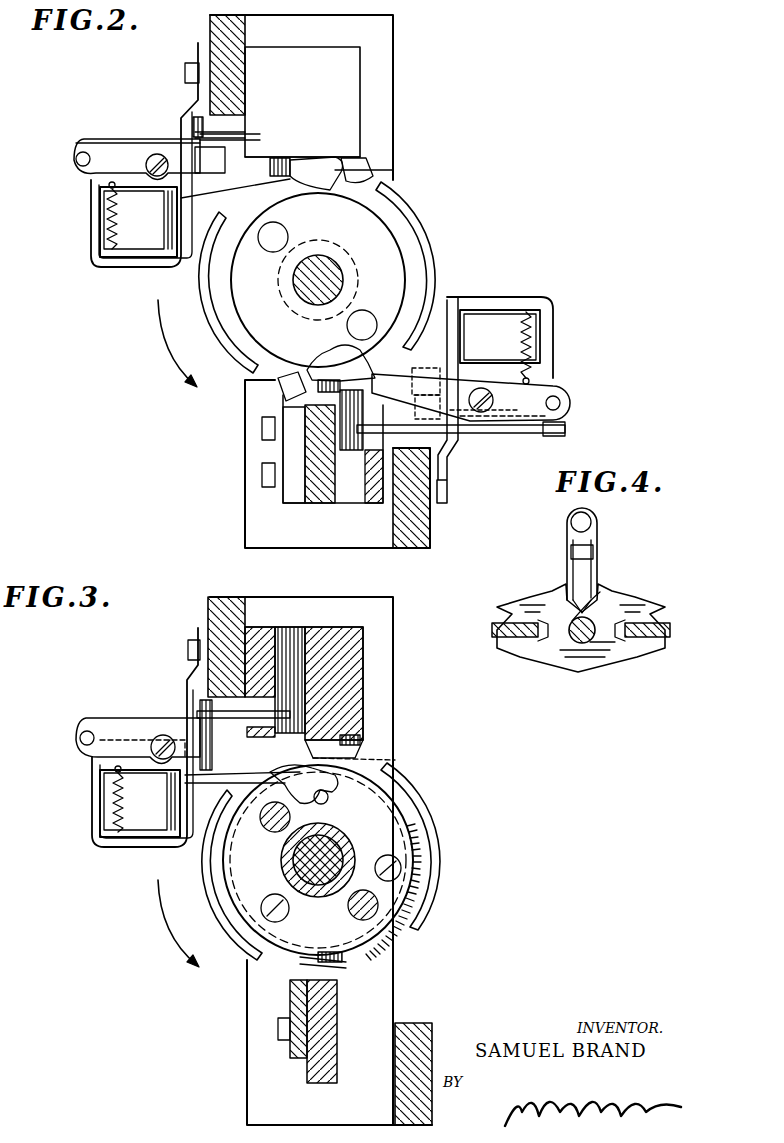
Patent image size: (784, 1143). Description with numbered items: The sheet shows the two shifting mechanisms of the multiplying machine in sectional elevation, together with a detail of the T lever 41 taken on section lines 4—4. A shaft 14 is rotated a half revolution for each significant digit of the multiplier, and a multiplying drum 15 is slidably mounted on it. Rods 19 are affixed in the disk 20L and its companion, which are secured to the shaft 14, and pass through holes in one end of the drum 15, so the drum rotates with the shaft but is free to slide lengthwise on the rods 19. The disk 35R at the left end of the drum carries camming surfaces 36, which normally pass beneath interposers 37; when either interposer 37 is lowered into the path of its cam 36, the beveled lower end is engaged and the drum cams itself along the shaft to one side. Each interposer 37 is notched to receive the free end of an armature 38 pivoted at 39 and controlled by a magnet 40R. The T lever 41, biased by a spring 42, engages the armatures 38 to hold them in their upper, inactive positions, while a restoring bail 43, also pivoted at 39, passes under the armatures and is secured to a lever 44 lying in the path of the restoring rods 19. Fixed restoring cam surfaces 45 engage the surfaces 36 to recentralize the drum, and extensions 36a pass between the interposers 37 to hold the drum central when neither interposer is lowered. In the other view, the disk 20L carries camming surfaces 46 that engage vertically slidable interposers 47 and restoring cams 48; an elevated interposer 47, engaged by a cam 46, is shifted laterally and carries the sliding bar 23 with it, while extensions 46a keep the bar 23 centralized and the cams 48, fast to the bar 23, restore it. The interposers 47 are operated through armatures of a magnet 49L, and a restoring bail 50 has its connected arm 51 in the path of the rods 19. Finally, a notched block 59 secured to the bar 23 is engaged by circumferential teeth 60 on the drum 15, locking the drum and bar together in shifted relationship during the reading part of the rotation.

In FIG. 2, the lever 4 is at (410, 380).
In FIG. 2, the shaft 14 is at (340, 266).
In FIG. 3, the shaft 14 is at (345, 848).
In FIG. 3, the multiplying drum 15 is at (398, 803).
In FIG. 2, the rods 19 is at (282, 233).
In FIG. 3, the rods 19 is at (272, 830).
In FIG. 2, the disk 20L is at (392, 265).
In FIG. 2, the sliding bar 23 is at (312, 502).
In FIG. 3, the sliding bar 23 is at (330, 1058).
In FIG. 3, the disk 35R is at (406, 855).
In FIG. 3, the camming surface 36 is at (360, 757).
In FIG. 3, the cam extension 36a is at (352, 735).
In FIG. 2, the interposer 37 is at (279, 160).
In FIG. 3, the interposer 37 is at (290, 655).
In FIG. 2, the armature 38 is at (170, 136).
In FIG. 3, the armature 38 is at (170, 716).
In FIG. 4, the armature 38 is at (492, 628).
In FIG. 2, the pivot 39 is at (76, 157).
In FIG. 3, the pivot 39 is at (80, 740).
In FIG. 2, the magnet 40R is at (125, 228).
In FIG. 3, the magnet 40R is at (135, 822).
In FIG. 2, the T lever 41 is at (442, 470).
In FIG. 3, the T lever 41 is at (200, 697).
In FIG. 4, the T lever 41 is at (585, 674).
In FIG. 4, the spring 42 is at (590, 610).
In FIG. 2, the restoring bail 43 is at (120, 152).
In FIG. 3, the restoring bail 43 is at (118, 750).
In FIG. 2, the lever 44 is at (110, 195).
In FIG. 3, the lever 44 is at (115, 787).
In FIG. 2, the restoring cam surface 45 is at (372, 161).
In FIG. 3, the restoring cam surface 45 is at (374, 766).
In FIG. 2, the camming surface 46 is at (372, 368).
In FIG. 2, the cam extension 46a is at (314, 162).
In FIG. 2, the interposer 47 is at (358, 452).
In FIG. 2, the restoring cam 48 is at (276, 388).
In FIG. 2, the magnet 49L is at (505, 340).
In FIG. 2, the restoring bail 50 is at (524, 433).
In FIG. 2, the arm 51 is at (328, 360).
In FIG. 3, the notched block 59 is at (300, 990).
In FIG. 2, the circumferential teeth 60 is at (205, 284).
In FIG. 3, the circumferential teeth 60 is at (210, 897).